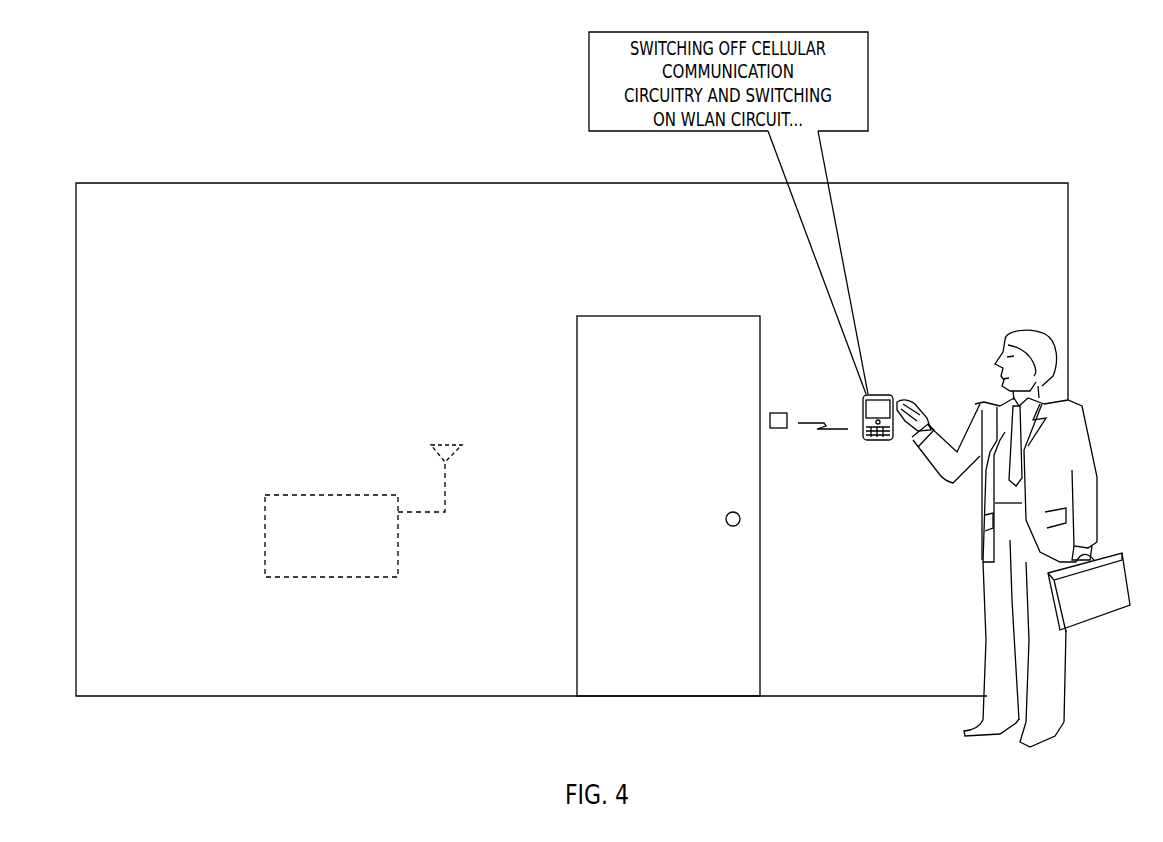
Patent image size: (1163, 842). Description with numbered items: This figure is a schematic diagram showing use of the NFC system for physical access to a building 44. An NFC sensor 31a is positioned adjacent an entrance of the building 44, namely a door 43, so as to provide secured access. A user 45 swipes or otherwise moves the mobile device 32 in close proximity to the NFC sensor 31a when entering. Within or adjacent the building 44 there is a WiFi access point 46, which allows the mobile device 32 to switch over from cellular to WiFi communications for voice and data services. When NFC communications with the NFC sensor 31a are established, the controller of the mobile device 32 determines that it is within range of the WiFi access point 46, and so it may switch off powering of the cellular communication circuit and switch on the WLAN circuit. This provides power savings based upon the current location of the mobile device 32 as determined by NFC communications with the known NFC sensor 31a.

The NFC sensor 31a is at (775, 428).
The mobile device 32 is at (893, 394).
The door 43 is at (700, 670).
The building 44 is at (1043, 183).
The user 45 is at (1073, 427).
The WiFi access point 46 is at (318, 578).